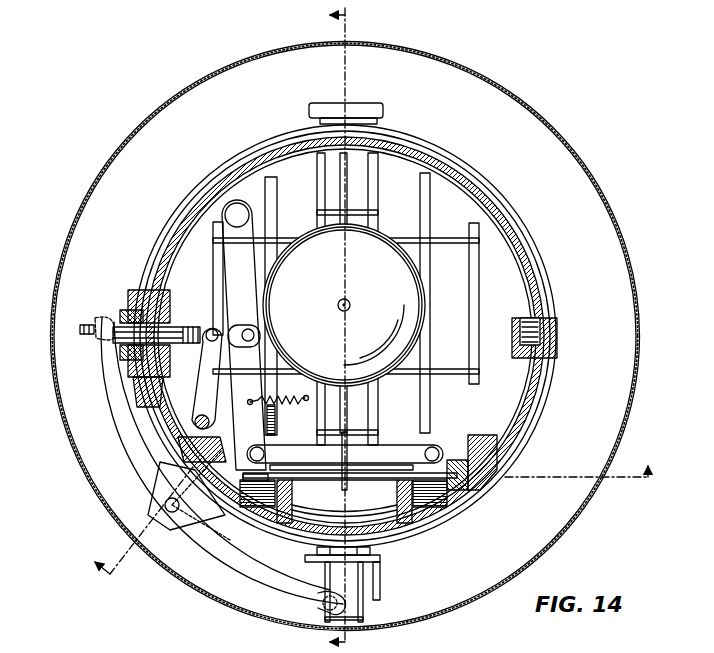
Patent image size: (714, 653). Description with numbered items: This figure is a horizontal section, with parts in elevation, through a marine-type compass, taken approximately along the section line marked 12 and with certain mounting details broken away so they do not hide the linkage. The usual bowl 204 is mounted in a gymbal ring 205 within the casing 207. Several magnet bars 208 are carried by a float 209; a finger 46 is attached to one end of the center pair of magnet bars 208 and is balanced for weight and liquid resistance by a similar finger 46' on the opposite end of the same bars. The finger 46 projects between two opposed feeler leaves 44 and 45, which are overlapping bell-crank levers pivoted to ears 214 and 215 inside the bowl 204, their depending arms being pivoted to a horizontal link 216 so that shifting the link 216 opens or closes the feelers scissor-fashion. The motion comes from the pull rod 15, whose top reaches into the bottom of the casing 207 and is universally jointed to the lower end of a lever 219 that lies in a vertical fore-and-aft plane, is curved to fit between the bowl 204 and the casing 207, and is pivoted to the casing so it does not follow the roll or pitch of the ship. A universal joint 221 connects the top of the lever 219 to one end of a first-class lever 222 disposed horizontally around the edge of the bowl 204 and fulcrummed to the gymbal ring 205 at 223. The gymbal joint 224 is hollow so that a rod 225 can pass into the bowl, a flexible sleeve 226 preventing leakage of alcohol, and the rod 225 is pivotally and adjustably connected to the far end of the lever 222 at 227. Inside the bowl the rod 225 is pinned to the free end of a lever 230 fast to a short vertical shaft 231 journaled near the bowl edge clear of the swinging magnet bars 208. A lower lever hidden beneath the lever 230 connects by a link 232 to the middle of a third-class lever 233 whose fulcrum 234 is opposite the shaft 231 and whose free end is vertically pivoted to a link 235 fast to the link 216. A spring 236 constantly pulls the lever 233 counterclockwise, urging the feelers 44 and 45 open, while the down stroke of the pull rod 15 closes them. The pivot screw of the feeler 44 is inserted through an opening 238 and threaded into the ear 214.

The section line 12 is at (355, 328).
The pull rod 15 is at (378, 534).
The feeler leaf 44 is at (393, 463).
The feeler leaf 45 is at (248, 473).
The finger 46 is at (344, 477).
The finger 46' is at (359, 274).
The bowl 204 is at (537, 262).
The gymbal ring 205 is at (520, 212).
The casing 207 is at (634, 389).
The magnet bars 208 is at (272, 190).
The float 209 is at (344, 305).
The ear 214 is at (483, 435).
The ear 215 is at (217, 444).
The link 216 is at (447, 447).
The lever 219 is at (365, 607).
The universal joint 221 is at (315, 590).
The first-class lever 222 is at (97, 367).
The fulcrum 223 is at (167, 500).
The gymbal joint 224 is at (124, 308).
The rod 225 is at (116, 318).
The flexible sleeve 226 is at (200, 313).
The pivotal adjustable connection 227 is at (100, 320).
The lever 230 is at (195, 380).
The short vertical shaft 231 is at (208, 422).
The link 232 is at (256, 325).
The third-class lever 233 is at (232, 269).
The fulcrum 234 is at (233, 213).
The link 235 is at (298, 449).
The spring 236 is at (277, 403).
The opening 238 is at (265, 508).